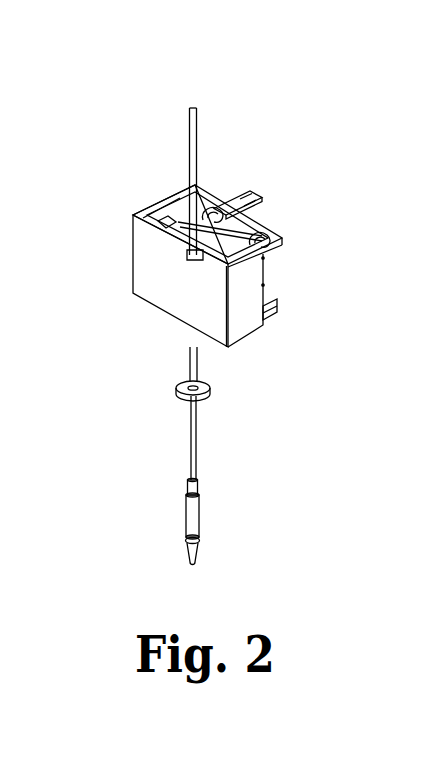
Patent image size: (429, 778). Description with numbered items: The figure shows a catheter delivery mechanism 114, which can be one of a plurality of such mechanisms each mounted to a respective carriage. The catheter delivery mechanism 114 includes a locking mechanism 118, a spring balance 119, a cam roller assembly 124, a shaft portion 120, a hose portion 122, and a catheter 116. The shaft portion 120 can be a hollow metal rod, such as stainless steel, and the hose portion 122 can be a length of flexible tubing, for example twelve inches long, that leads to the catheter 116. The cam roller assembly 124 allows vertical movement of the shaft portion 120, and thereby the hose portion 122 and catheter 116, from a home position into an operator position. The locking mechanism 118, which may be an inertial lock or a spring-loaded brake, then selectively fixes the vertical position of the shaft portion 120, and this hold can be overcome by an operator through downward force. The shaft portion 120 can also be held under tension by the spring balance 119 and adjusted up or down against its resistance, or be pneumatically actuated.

The catheter delivery mechanism 114 is at (337, 151).
The catheter 116 is at (196, 567).
The locking mechanism 118 is at (238, 265).
The spring balance 119 is at (167, 275).
The shaft portion 120 is at (197, 165).
The hose portion 122 is at (196, 446).
The cam roller assembly 124 is at (210, 390).